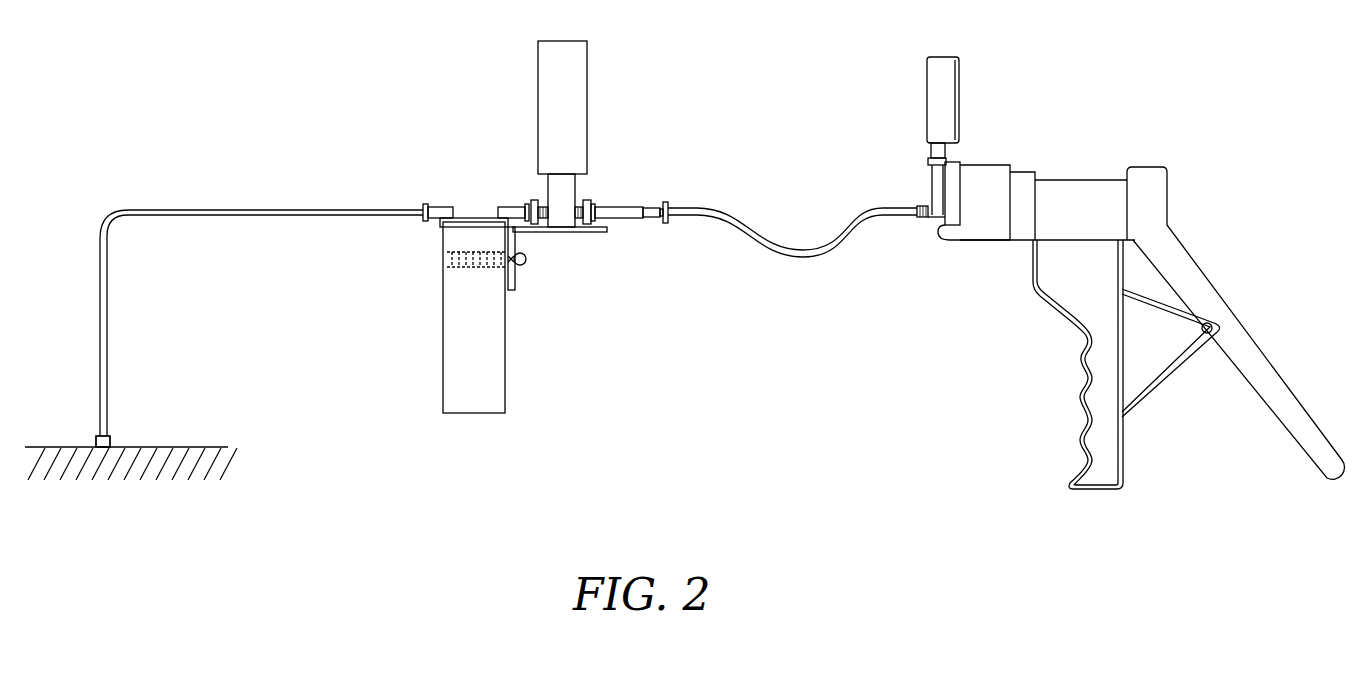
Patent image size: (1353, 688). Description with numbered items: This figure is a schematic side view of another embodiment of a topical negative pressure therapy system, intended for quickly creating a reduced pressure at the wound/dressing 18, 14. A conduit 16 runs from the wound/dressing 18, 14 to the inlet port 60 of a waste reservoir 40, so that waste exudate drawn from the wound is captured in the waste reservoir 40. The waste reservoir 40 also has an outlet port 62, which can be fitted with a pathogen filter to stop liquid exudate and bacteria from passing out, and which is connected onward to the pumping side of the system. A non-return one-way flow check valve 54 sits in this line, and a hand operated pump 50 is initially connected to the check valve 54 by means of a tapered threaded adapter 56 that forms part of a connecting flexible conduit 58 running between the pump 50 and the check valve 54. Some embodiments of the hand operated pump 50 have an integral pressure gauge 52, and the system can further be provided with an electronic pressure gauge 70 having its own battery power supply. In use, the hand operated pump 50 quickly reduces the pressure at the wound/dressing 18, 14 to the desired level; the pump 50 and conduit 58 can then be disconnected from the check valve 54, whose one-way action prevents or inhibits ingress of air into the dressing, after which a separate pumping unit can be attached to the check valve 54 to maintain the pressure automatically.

The dressing 14 is at (131, 458).
The conduit 16 is at (222, 209).
The wound 18 is at (112, 441).
The waste reservoir 40 is at (426, 310).
The hand operated pump 50 is at (1083, 168).
The integral pressure gauge 52 is at (960, 86).
The non-return one-way flow check valve 54 is at (615, 210).
The tapered threaded adapter 56 is at (672, 204).
The connecting flexible conduit 58 is at (805, 258).
The inlet port 60 is at (454, 206).
The outlet port 62 is at (514, 206).
The electronic pressure gauge 70 is at (538, 57).